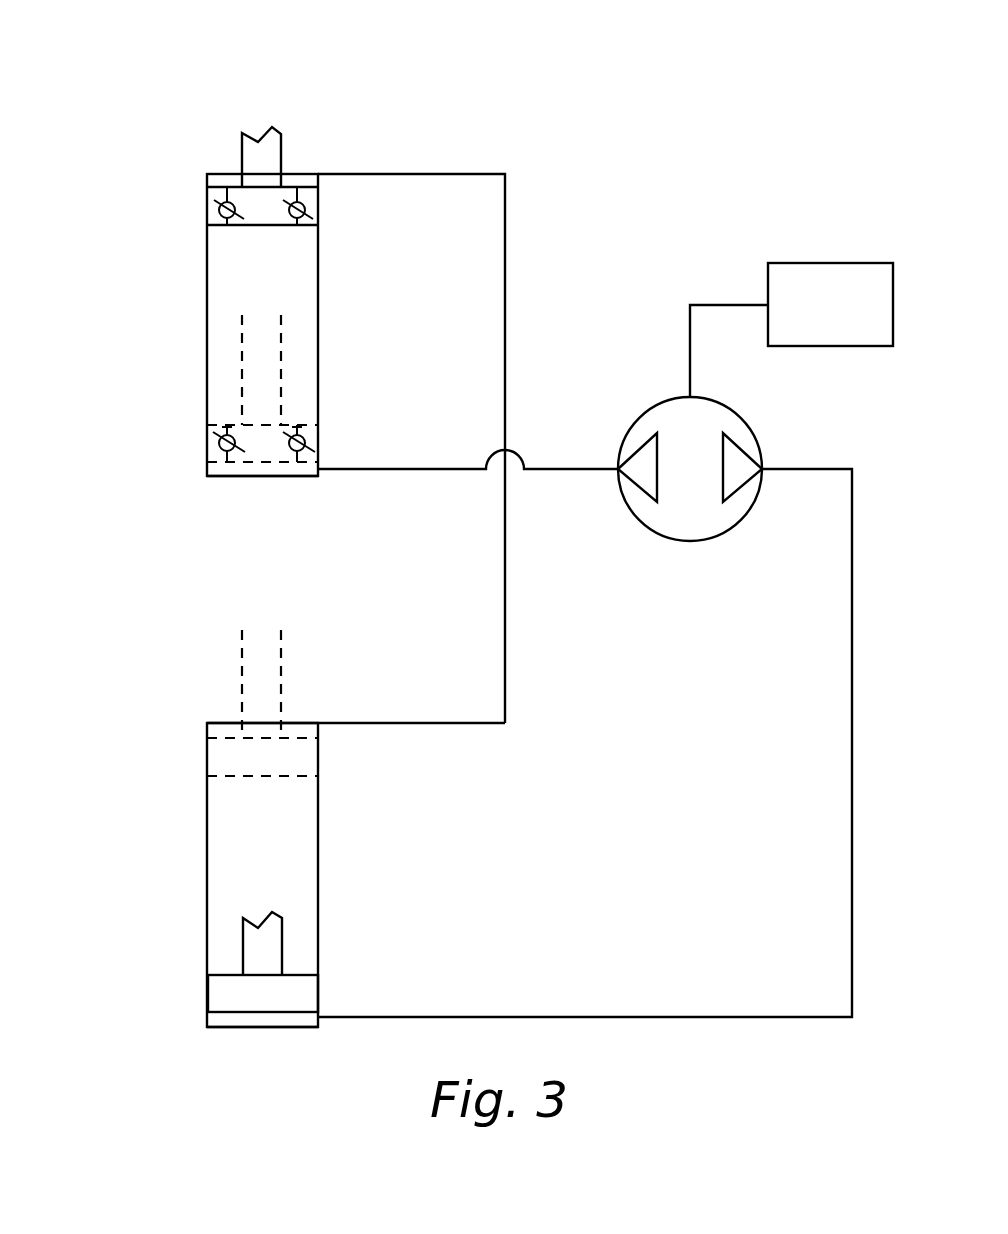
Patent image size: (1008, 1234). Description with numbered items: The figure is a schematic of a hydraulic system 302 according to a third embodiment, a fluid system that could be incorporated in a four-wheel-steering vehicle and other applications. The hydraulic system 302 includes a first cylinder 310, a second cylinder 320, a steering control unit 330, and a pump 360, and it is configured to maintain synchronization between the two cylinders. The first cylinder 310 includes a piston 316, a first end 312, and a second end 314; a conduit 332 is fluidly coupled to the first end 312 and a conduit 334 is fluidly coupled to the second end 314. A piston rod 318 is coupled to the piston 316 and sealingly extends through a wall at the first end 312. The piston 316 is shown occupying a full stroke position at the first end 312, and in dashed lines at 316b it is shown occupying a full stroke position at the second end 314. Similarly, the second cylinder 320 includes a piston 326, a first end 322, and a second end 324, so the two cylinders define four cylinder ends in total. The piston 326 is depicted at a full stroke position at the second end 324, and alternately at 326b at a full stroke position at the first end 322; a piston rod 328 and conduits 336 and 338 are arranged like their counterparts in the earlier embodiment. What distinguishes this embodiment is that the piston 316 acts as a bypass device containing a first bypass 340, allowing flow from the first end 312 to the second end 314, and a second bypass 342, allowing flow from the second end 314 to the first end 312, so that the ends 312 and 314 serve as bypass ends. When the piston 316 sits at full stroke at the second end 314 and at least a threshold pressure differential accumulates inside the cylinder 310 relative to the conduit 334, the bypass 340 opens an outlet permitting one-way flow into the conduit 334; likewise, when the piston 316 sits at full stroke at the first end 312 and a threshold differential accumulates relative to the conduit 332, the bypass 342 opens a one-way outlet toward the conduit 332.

The hydraulic system 302 is at (680, 95).
The first cylinder 310 is at (203, 397).
The first end 312 is at (207, 174).
The second end 314 is at (205, 467).
The piston 316 is at (218, 172).
The piston at full stroke position at second end 316b is at (205, 417).
The piston rod 318 is at (242, 157).
The second cylinder 320 is at (203, 845).
The first end 322 is at (207, 723).
The second end 324 is at (207, 1013).
The piston 326 is at (228, 972).
The piston at full stroke position at first end 326b is at (228, 738).
The piston rod 328 is at (242, 707).
The steering control unit 330 is at (642, 413).
The conduit 332 is at (350, 173).
The conduit 334 is at (350, 469).
The conduit 336 is at (352, 725).
The conduit 338 is at (367, 1017).
The first bypass 340 is at (232, 423).
The second bypass 342 is at (307, 423).
The pump 360 is at (793, 262).